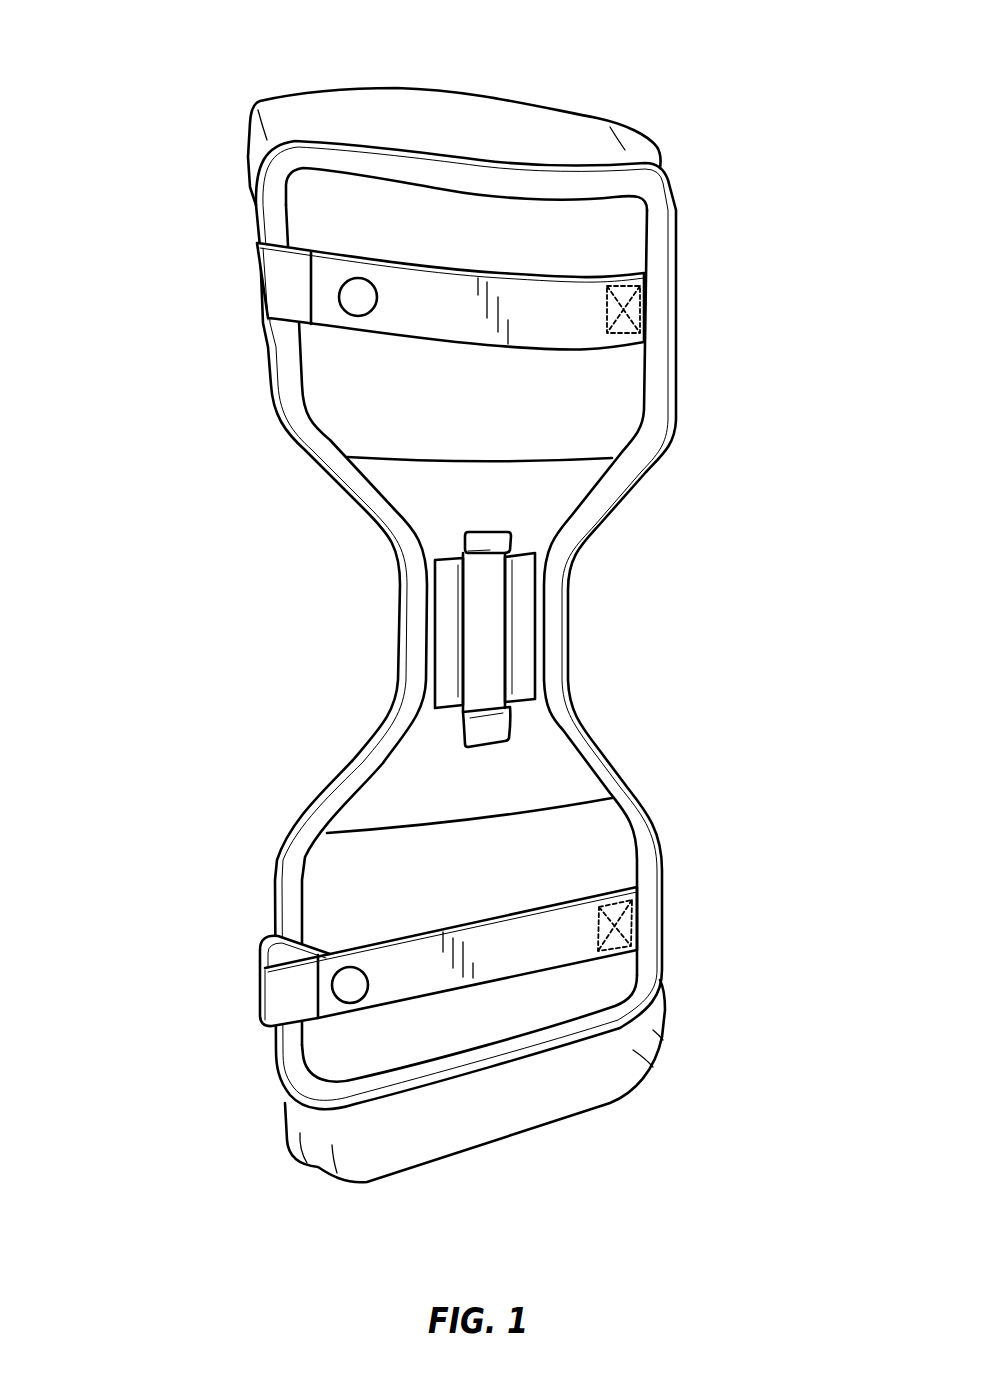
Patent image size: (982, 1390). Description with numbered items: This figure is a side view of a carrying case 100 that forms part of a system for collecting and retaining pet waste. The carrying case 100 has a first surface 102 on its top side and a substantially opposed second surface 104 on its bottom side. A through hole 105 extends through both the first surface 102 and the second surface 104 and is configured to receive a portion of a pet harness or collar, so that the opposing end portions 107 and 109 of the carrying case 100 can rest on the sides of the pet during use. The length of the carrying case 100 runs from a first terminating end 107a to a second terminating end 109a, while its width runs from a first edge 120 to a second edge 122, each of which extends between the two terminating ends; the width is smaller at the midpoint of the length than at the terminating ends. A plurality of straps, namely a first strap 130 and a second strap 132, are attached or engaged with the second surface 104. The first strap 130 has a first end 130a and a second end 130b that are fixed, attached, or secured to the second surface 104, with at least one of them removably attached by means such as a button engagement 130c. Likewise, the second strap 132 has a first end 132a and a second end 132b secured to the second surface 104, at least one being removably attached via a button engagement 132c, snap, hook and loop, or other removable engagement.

The carrying case 100 is at (168, 95).
The first surface 102 is at (550, 798).
The second surface 104 is at (592, 402).
The through hole 105 is at (485, 628).
The end portion 107 is at (632, 218).
The first terminating end 107a is at (373, 113).
The end portion 109 is at (608, 853).
The second terminating end 109a is at (453, 1158).
The first edge 120 is at (310, 437).
The second edge 122 is at (638, 447).
The first strap 130 is at (463, 312).
The first end 130a is at (637, 313).
The second end 130b is at (322, 286).
The button engagement 130c is at (355, 308).
The second strap 132 is at (448, 985).
The first end 132a is at (625, 923).
The second end 132b is at (333, 1026).
The button engagement 132c is at (338, 985).